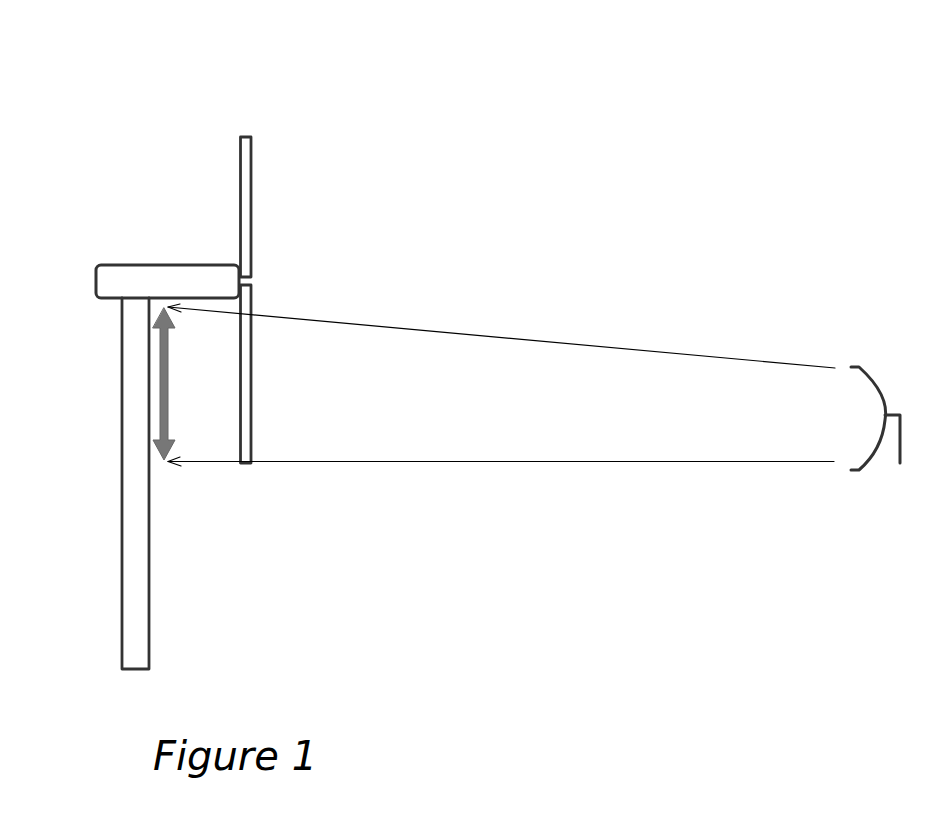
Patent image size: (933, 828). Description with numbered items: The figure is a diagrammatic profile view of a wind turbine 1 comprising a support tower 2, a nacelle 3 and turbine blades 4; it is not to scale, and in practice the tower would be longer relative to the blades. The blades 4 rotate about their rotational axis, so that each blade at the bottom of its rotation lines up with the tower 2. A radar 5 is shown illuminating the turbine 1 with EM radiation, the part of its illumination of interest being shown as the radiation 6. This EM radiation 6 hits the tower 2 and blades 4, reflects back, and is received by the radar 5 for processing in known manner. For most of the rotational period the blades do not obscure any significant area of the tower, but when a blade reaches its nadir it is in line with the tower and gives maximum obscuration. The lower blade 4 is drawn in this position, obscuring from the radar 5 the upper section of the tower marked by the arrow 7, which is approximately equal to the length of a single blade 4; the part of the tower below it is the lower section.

The wind turbine 1 is at (163, 148).
The support tower 2 is at (118, 493).
The nacelle 3 is at (123, 261).
The turbine blades 4 is at (252, 297).
The radar 5 is at (883, 375).
The EM radiation 6 is at (607, 385).
The arrow 7 is at (170, 370).